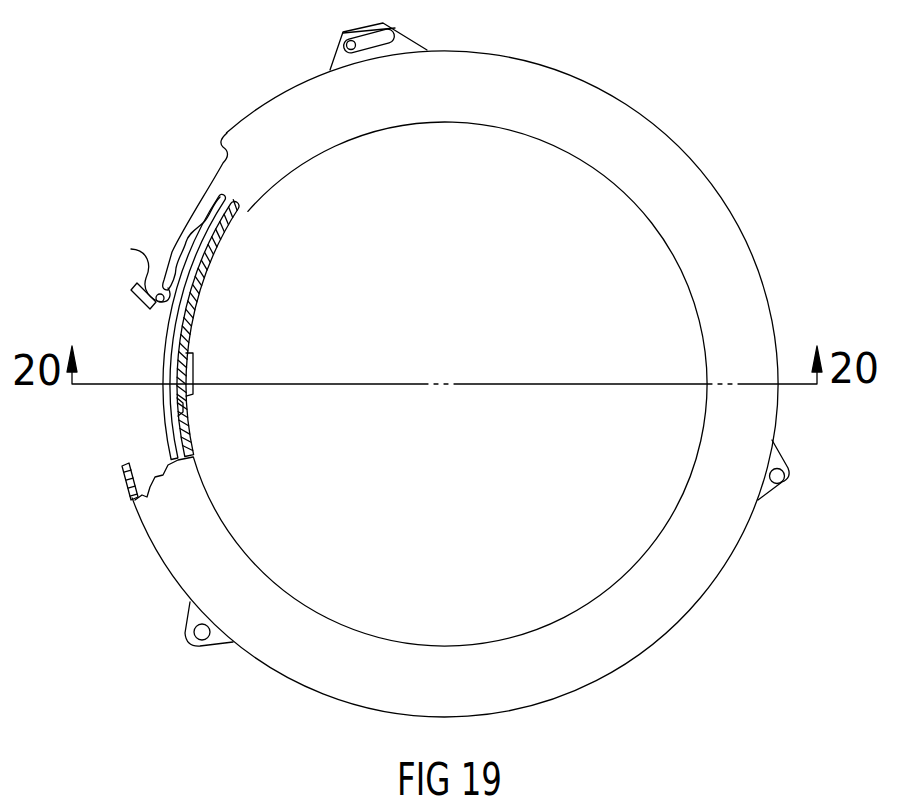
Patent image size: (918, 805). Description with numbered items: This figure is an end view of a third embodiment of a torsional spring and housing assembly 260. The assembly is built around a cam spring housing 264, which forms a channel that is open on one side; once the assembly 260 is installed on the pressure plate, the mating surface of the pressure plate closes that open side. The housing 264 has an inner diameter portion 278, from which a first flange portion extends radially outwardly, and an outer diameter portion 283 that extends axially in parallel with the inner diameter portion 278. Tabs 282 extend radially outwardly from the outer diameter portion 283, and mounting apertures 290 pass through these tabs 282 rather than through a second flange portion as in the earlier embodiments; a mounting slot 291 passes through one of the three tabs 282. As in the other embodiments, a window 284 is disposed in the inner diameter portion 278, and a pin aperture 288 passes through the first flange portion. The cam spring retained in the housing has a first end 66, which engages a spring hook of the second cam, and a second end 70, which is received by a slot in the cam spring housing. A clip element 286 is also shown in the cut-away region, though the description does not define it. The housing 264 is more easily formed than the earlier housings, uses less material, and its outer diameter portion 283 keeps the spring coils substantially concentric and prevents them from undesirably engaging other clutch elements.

The torsional spring and housing assembly 260 is at (733, 152).
The cam spring housing 264 is at (577, 147).
The outer diameter portion 283 is at (672, 628).
The tabs 282 is at (384, 24).
The mounting apertures 290 is at (783, 478).
The mounting slot 291 is at (346, 40).
The inner diameter portion 278 is at (203, 293).
The pin aperture 288 is at (172, 299).
The second end 70 is at (194, 364).
The window 284 is at (183, 407).
The clip 286 is at (143, 266).
The first end 66 is at (153, 311).